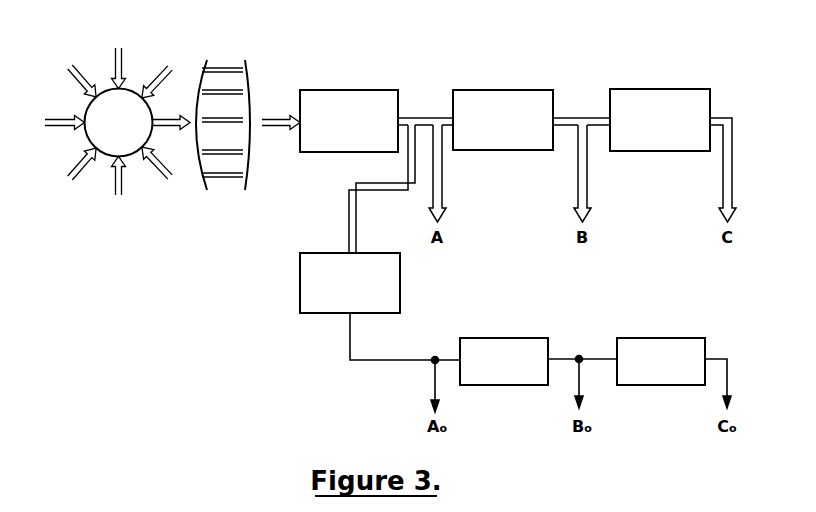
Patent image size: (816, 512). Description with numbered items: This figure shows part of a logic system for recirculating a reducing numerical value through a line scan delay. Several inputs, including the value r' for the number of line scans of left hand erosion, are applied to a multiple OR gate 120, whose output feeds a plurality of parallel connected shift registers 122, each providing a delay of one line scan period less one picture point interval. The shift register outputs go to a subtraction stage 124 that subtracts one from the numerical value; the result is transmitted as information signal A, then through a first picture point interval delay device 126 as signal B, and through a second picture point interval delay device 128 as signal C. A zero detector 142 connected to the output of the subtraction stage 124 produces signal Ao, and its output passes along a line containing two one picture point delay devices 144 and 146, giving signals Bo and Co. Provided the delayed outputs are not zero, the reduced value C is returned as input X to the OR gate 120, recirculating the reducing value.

The multiple OR gate 120 is at (87, 137).
The parallel connected shift registers 122 is at (221, 68).
The subtraction stage 124 is at (335, 90).
The first picture point interval delay device 126 is at (492, 90).
The second picture point interval delay device 128 is at (642, 89).
The zero detector 142 is at (300, 287).
The first one picture point delay device 144 is at (488, 338).
The one picture point delay device 146 is at (647, 338).